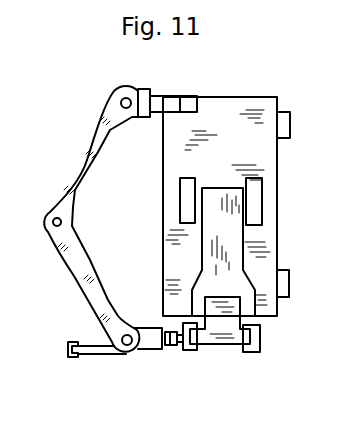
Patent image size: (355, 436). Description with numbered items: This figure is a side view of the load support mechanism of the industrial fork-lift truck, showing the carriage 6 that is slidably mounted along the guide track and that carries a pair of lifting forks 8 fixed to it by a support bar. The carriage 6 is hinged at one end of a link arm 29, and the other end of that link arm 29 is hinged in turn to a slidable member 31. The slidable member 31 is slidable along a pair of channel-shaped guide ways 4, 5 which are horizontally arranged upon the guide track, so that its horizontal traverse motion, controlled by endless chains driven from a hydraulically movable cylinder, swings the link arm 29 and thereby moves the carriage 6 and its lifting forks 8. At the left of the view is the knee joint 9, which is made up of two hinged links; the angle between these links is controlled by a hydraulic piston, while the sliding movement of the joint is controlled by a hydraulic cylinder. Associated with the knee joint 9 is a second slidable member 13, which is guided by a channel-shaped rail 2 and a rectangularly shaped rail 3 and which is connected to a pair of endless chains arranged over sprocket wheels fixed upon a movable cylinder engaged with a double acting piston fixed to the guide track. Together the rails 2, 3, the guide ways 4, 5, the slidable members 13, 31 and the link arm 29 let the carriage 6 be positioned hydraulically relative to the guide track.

The channel-shaped rail 2 is at (66, 344).
The rectangularly shaped rail 3 is at (171, 346).
The channel-shaped guide way 4 is at (187, 350).
The channel-shaped guide way 5 is at (260, 342).
The carriage 6 is at (250, 145).
The lifting fork 8 is at (290, 126).
The knee joint 9 is at (53, 232).
The slidable member 13 is at (147, 333).
The link arm 29 is at (225, 239).
The slidable member 31 is at (216, 344).